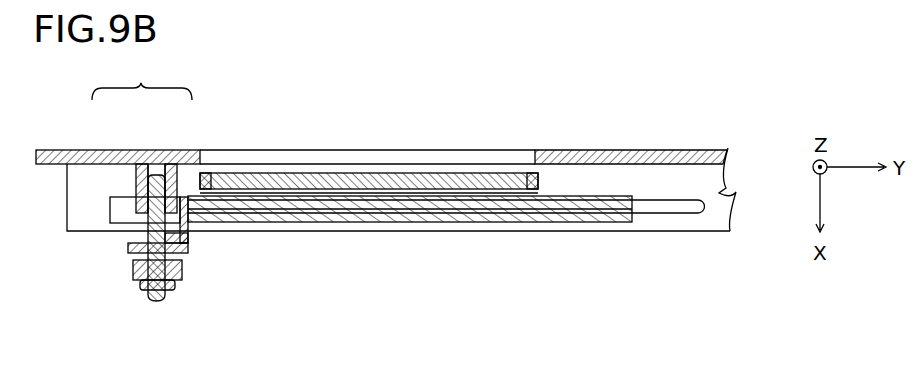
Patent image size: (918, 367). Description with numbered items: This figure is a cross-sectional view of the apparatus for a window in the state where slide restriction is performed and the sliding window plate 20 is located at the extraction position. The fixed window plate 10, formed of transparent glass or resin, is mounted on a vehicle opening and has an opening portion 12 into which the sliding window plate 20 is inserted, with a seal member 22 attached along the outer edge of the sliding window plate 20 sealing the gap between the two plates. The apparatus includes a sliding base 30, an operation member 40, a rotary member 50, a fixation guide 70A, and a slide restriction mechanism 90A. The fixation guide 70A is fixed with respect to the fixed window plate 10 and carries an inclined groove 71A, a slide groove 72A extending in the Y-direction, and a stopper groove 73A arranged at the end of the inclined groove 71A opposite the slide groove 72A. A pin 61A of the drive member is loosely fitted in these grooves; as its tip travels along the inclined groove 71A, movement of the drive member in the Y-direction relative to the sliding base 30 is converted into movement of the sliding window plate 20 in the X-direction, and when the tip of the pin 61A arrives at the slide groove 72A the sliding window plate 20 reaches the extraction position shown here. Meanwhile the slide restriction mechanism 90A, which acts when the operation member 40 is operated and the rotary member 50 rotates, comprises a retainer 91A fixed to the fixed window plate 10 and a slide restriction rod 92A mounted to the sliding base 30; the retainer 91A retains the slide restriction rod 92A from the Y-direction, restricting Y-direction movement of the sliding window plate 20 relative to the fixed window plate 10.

The fixed window plate 10 is at (62, 150).
The opening portion 12 is at (312, 157).
The sliding window plate 20 is at (368, 173).
The seal member 22 is at (208, 173).
The sliding base 30 is at (110, 210).
The operation member 40 is at (142, 284).
The rotary member 50 is at (133, 268).
The pin 61A is at (285, 230).
The fixation guide 70A is at (736, 193).
The inclined groove 71A is at (237, 230).
The slide groove 72A is at (378, 230).
The stopper groove 73A is at (220, 173).
The slide restriction mechanism 90A is at (160, 83).
The retainer 91A is at (153, 174).
The slide restriction rod 92A is at (163, 172).